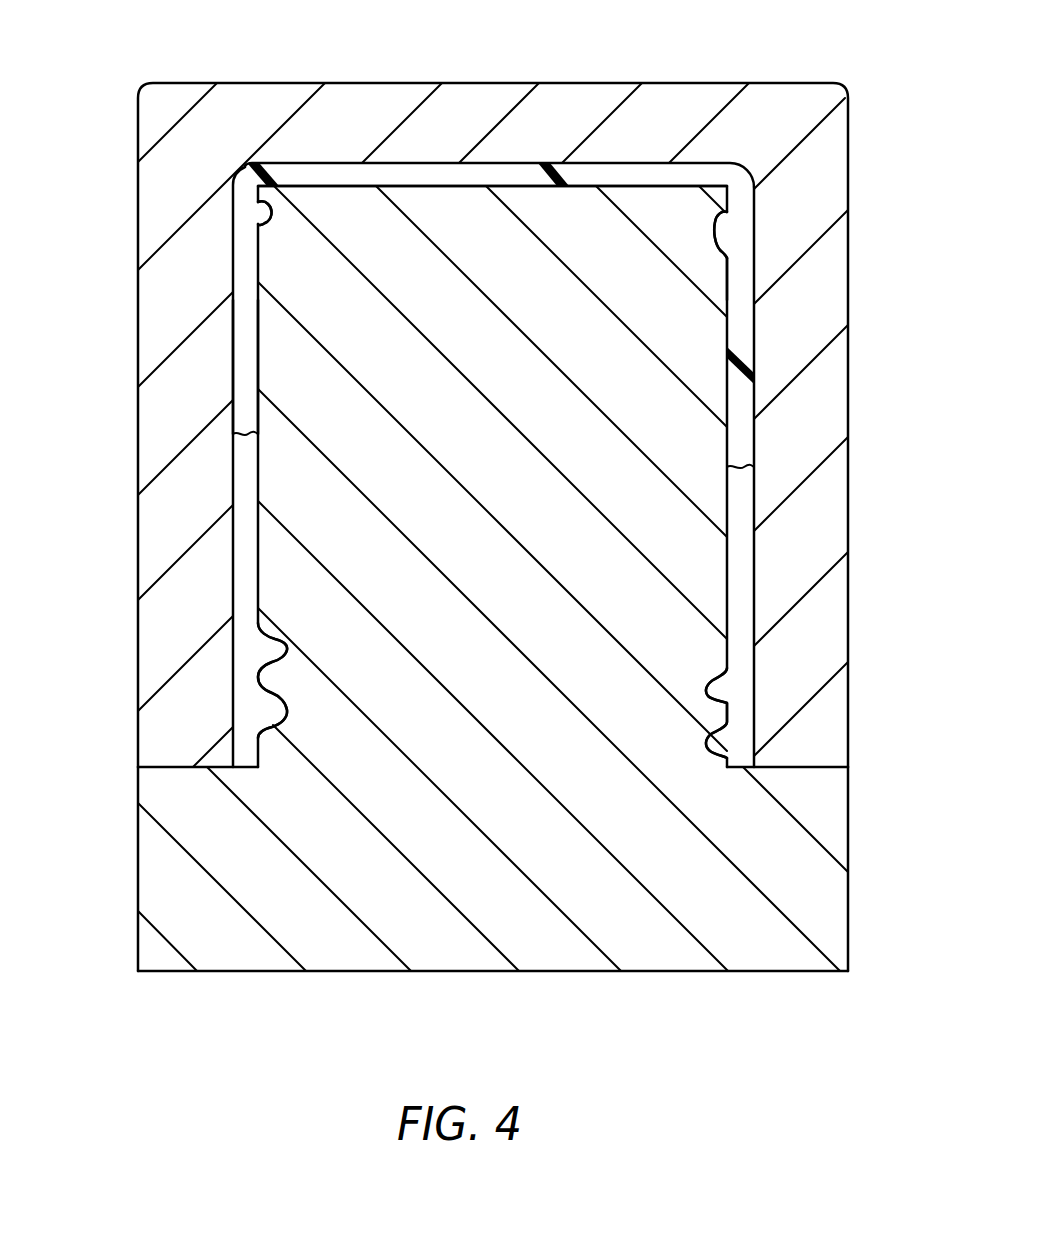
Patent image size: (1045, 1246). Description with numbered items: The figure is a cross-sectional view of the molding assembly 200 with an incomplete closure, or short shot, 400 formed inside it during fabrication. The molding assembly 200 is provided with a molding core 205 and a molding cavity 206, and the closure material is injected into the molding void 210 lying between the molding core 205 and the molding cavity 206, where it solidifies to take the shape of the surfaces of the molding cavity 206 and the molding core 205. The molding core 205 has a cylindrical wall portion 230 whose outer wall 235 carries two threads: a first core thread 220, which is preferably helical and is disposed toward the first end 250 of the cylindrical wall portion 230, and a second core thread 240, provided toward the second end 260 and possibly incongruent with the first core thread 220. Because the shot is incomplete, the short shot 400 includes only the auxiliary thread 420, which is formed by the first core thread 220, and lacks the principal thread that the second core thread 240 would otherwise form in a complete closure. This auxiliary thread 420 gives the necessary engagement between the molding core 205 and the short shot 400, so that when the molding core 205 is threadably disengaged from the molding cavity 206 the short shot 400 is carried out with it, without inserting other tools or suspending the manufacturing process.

The molding assembly 200 is at (120, 97).
The molding core 205 is at (493, 973).
The molding cavity 206 is at (602, 82).
The molding void 210 is at (738, 555).
The first core thread 220 is at (266, 200).
The cylindrical wall portion 230 is at (728, 443).
The outer wall 235 is at (727, 290).
The second core thread 240 is at (287, 712).
The first end 250 is at (641, 186).
The second end 260 is at (642, 973).
The incomplete closure 400 is at (232, 372).
The auxiliary thread 420 is at (267, 223).